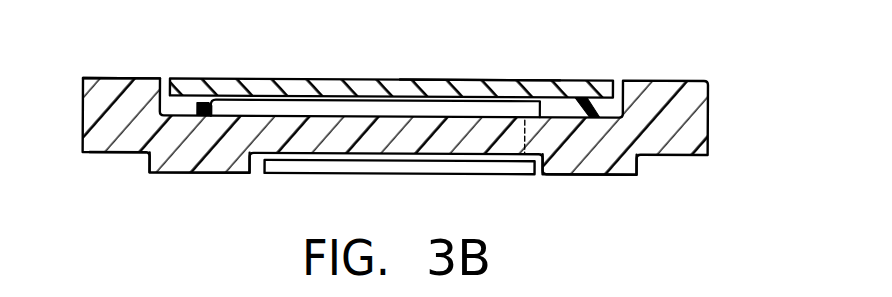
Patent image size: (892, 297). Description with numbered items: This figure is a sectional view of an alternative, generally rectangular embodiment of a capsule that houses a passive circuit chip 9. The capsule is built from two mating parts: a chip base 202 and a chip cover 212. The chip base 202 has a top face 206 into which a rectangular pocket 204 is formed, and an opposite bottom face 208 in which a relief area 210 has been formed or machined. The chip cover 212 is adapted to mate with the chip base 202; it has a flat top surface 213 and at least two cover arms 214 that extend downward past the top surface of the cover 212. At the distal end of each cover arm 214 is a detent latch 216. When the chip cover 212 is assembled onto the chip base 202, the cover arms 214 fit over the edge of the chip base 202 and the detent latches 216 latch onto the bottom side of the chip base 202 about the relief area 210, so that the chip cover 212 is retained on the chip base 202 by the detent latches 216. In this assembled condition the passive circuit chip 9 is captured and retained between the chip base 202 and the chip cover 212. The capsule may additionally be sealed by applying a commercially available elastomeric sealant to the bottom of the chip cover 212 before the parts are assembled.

The passive circuit chip 9 is at (522, 107).
The chip base 202 is at (709, 131).
The rectangular pocket 204 is at (206, 105).
The top face 206 is at (102, 77).
The bottom face 208 is at (209, 174).
The relief area 210 is at (108, 156).
The chip cover 212 is at (471, 66).
The flat top surface 213 is at (373, 78).
The cover arms 214 is at (529, 156).
The detent latch 216 is at (463, 175).